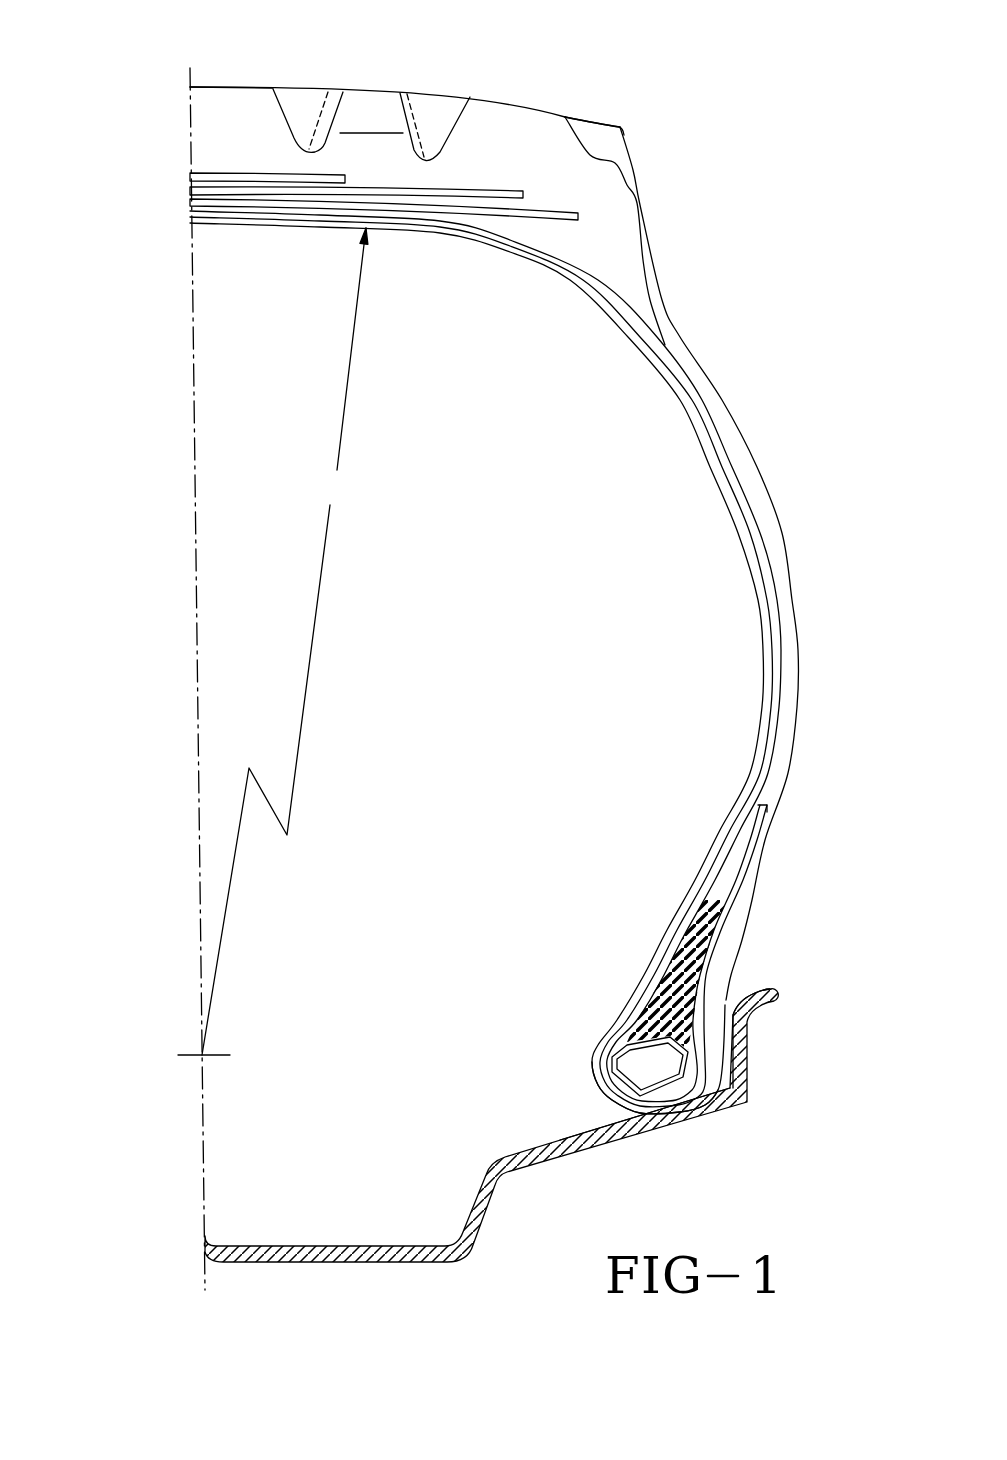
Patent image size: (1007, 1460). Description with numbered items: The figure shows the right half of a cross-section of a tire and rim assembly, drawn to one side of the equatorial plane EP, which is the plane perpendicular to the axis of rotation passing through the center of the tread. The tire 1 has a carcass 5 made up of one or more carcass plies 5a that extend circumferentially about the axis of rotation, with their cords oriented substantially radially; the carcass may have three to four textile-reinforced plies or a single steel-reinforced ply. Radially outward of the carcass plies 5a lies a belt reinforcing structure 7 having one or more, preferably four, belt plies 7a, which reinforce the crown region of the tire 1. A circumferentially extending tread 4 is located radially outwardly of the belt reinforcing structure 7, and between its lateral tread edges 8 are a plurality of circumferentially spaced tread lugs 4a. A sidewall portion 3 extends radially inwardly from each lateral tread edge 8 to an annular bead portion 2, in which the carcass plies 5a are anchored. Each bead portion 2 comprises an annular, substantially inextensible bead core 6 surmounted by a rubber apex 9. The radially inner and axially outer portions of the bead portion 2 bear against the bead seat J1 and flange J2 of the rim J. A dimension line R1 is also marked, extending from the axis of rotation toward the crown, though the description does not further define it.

The tire 1 is at (742, 108).
The bead portion 2 is at (583, 1024).
The sidewall portion 3 is at (780, 411).
The tread 4 is at (402, 70).
The tread lug 4a is at (225, 118).
The carcass 5 is at (716, 573).
The carcass ply 5a is at (675, 395).
The bead core 6 is at (637, 1073).
The belt reinforcing structure 7 is at (181, 191).
The belt ply 7a is at (233, 210).
The lateral tread edge 8 is at (622, 127).
The rubber apex 9 is at (672, 990).
The rim J is at (370, 1264).
The bead seat J1 is at (605, 1122).
The rim flange J2 is at (748, 1042).
The tire radius R1 is at (285, 641).
The equatorial plane EP is at (204, 690).